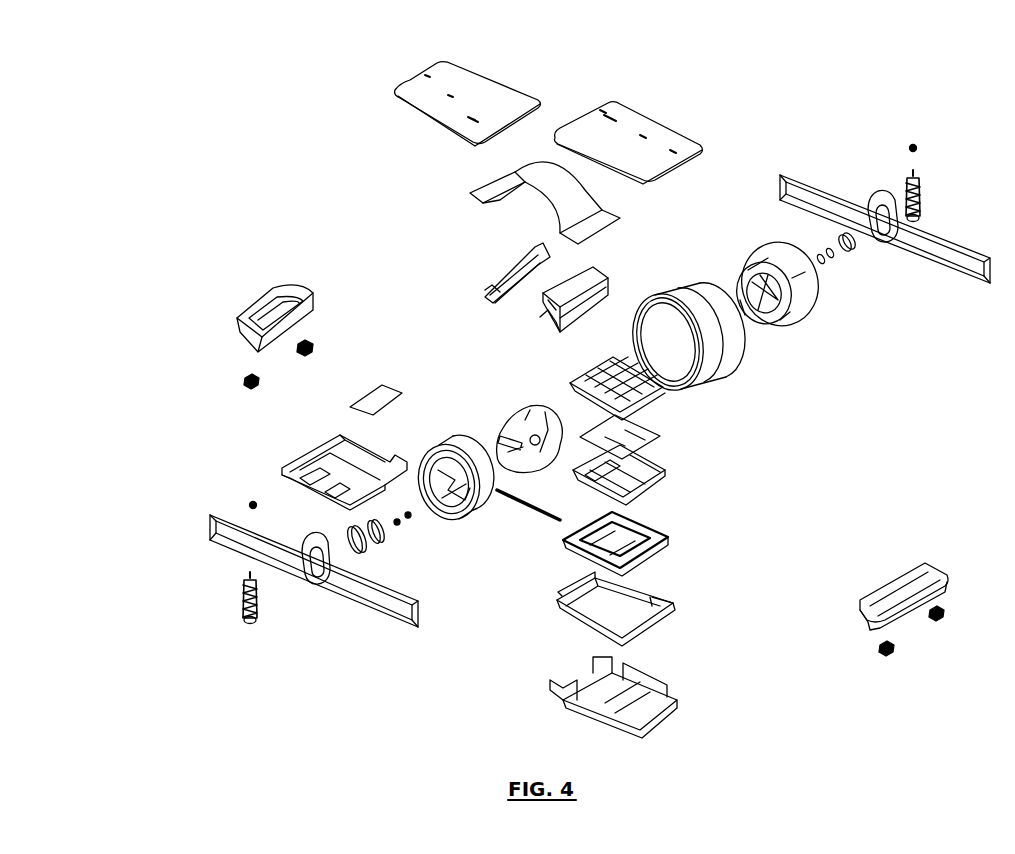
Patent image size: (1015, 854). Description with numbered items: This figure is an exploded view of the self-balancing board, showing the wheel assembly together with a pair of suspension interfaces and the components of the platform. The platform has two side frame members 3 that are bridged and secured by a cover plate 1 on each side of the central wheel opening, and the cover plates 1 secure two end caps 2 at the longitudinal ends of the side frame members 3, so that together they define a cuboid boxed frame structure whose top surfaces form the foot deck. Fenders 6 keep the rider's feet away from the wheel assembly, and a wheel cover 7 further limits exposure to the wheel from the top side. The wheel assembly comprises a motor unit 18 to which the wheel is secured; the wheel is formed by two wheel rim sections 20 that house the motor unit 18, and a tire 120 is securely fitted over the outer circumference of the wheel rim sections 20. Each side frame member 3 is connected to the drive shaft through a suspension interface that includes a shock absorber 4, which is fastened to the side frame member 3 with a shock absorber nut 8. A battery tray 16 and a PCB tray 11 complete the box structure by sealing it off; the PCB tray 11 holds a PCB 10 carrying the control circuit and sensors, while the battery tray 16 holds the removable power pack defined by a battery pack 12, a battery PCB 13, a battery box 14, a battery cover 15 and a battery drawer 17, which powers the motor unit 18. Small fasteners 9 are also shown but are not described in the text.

The cover plate 1 is at (632, 105).
The end cap 2 is at (236, 295).
The side frame member 3 is at (202, 531).
The shock absorber 4 is at (225, 612).
The fender 6 is at (477, 273).
The wheel cover 7 is at (477, 177).
The shock absorber nut 8 is at (233, 504).
The nut 9 is at (222, 378).
The PCB 10 is at (338, 414).
The PCB tray 11 is at (283, 458).
The battery pack 12 is at (677, 487).
The battery PCB 13 is at (672, 440).
The battery box 14 is at (677, 537).
The battery cover 15 is at (673, 404).
The battery tray 16 is at (677, 715).
The battery drawer 17 is at (672, 618).
The motor unit 18 is at (505, 400).
The wheel rim section 20 is at (758, 253).
The tire 120 is at (763, 365).